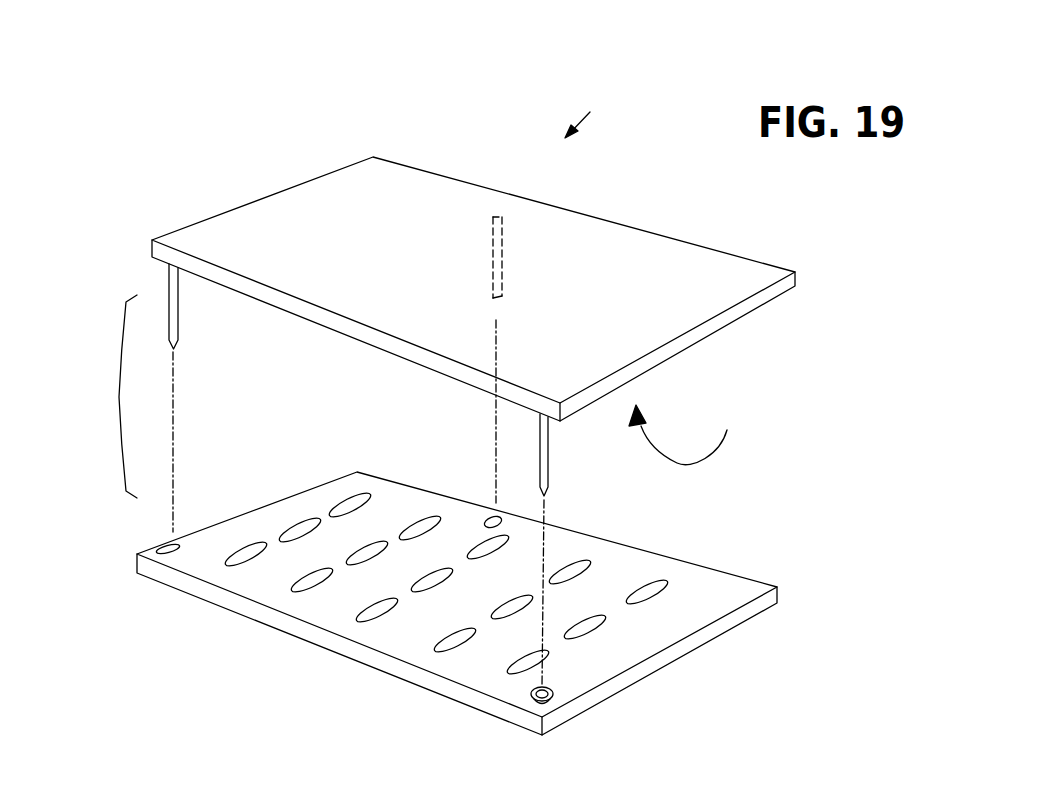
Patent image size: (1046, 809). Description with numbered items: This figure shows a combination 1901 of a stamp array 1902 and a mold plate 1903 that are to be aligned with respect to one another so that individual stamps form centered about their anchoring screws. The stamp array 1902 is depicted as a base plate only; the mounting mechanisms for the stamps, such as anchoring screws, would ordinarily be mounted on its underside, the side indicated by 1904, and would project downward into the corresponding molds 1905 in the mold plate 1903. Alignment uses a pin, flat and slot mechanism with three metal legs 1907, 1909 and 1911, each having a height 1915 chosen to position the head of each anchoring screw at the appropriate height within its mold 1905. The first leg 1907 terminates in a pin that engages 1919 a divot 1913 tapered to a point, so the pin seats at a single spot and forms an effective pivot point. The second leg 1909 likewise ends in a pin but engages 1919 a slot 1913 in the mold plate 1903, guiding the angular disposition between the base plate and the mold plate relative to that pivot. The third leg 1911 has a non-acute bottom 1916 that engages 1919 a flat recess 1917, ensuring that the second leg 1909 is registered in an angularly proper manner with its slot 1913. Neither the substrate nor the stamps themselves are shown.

The combination 1901 is at (604, 110).
The stamp array 1902 is at (220, 217).
The mold plate 1903 is at (137, 554).
The side of the base plate 1904 is at (698, 433).
The molds 1905 is at (428, 652).
The first leg 1907 is at (548, 462).
The second leg 1909 is at (178, 295).
The third leg 1911 is at (503, 244).
The divot and slot 1913 is at (167, 552).
The pin height 1915 is at (119, 397).
The non-acute bottom 1916 is at (493, 298).
The flat recess 1917 is at (488, 518).
The engagement 1919 is at (173, 417).